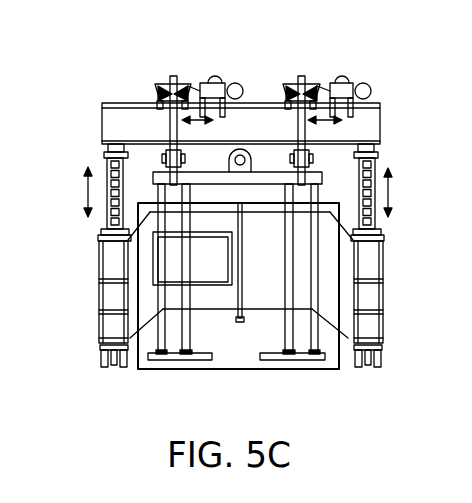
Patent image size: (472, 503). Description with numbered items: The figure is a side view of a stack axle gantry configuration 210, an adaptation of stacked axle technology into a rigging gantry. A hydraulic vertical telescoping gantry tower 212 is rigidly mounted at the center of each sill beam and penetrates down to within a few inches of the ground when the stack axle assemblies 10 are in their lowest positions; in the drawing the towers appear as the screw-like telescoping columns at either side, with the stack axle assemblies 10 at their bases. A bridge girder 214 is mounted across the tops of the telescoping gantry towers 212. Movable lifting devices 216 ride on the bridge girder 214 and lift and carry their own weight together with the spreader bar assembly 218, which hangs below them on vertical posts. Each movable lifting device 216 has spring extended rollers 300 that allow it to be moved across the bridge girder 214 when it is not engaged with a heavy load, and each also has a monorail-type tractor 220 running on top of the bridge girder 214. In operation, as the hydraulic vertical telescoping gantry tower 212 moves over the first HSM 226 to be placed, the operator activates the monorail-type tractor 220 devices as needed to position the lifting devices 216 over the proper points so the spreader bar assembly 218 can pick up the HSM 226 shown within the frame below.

The stack axle assembly 10 is at (105, 368).
The stack axle gantry configuration 210 is at (88, 279).
The hydraulic vertical telescoping gantry tower 212 is at (107, 168).
The bridge girder 214 is at (102, 122).
The movable lifting device 216 is at (169, 128).
The spreader bar assembly 218 is at (322, 178).
The monorail-type tractor 220 is at (329, 81).
The HSM 226 is at (305, 370).
The spring extended rollers 300 is at (288, 84).